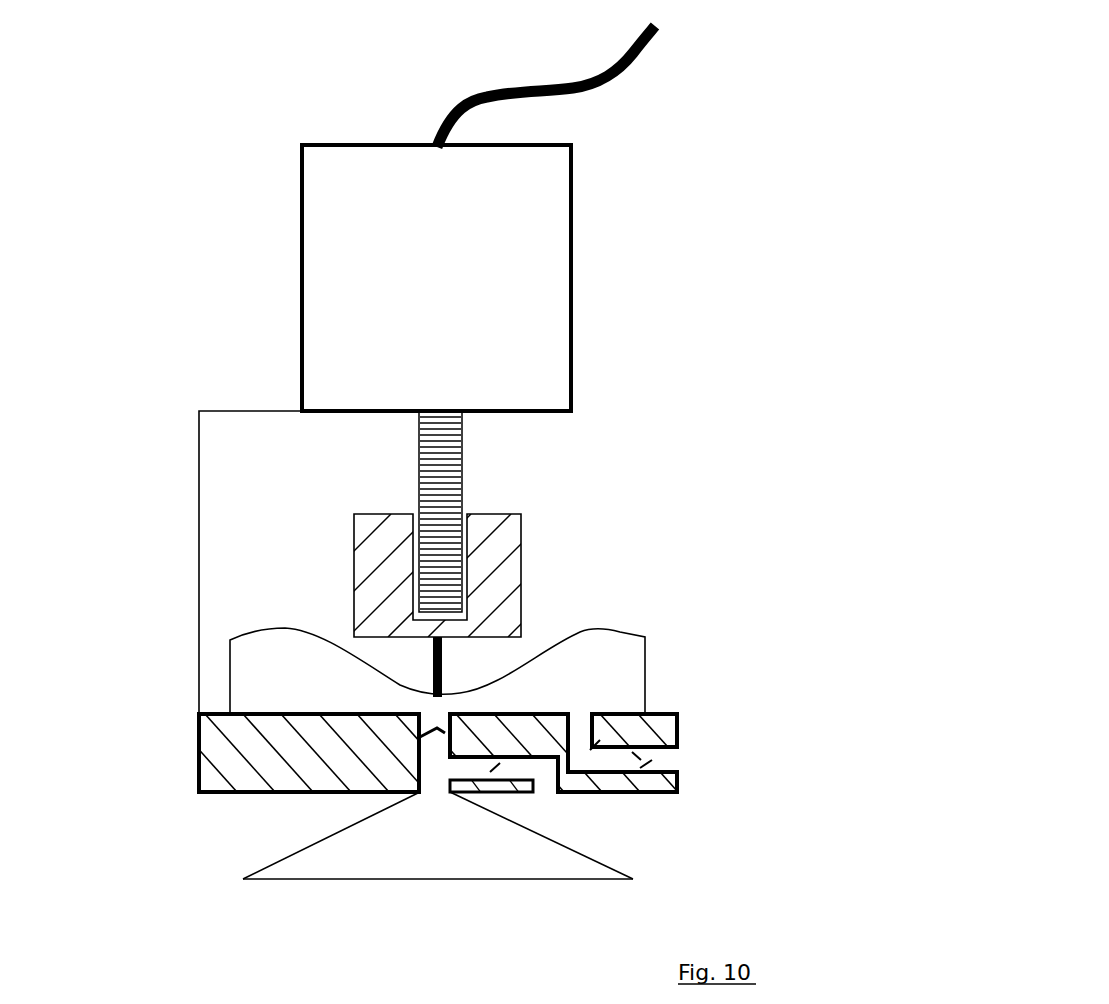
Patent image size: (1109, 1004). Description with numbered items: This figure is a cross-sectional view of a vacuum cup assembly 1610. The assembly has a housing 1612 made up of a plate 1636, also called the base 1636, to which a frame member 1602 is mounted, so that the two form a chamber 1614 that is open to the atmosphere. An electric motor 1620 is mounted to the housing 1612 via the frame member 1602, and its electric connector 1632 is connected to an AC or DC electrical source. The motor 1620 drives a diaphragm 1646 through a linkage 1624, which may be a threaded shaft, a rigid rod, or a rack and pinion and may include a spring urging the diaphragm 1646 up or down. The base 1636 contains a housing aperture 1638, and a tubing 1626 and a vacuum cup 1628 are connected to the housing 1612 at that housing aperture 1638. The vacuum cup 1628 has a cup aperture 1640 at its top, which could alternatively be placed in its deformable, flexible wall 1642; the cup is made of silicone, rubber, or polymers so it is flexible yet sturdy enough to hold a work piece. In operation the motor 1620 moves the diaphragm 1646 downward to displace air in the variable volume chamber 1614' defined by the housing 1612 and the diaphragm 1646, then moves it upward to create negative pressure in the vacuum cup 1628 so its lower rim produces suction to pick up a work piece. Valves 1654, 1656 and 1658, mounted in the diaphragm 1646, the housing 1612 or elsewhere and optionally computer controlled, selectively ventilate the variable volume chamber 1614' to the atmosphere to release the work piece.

The frame member 1602 is at (198, 523).
The vacuum cup assembly 1610 is at (722, 245).
The housing 1612 is at (683, 520).
The chamber 1614 is at (660, 455).
The variable volume chamber 1614' is at (665, 616).
The electric motor 1620 is at (302, 278).
The linkage 1624 is at (420, 488).
The tubing 1626 is at (420, 770).
The vacuum cup 1628 is at (268, 863).
The electric connector 1632 is at (660, 42).
The plate 1636 is at (198, 773).
The housing aperture 1638 is at (452, 741).
The cup aperture 1640 is at (433, 793).
The wall 1642 is at (610, 865).
The diaphragm 1646 is at (243, 632).
The valve 1654 is at (535, 790).
The valve 1656 is at (637, 752).
The valve 1658 is at (437, 730).